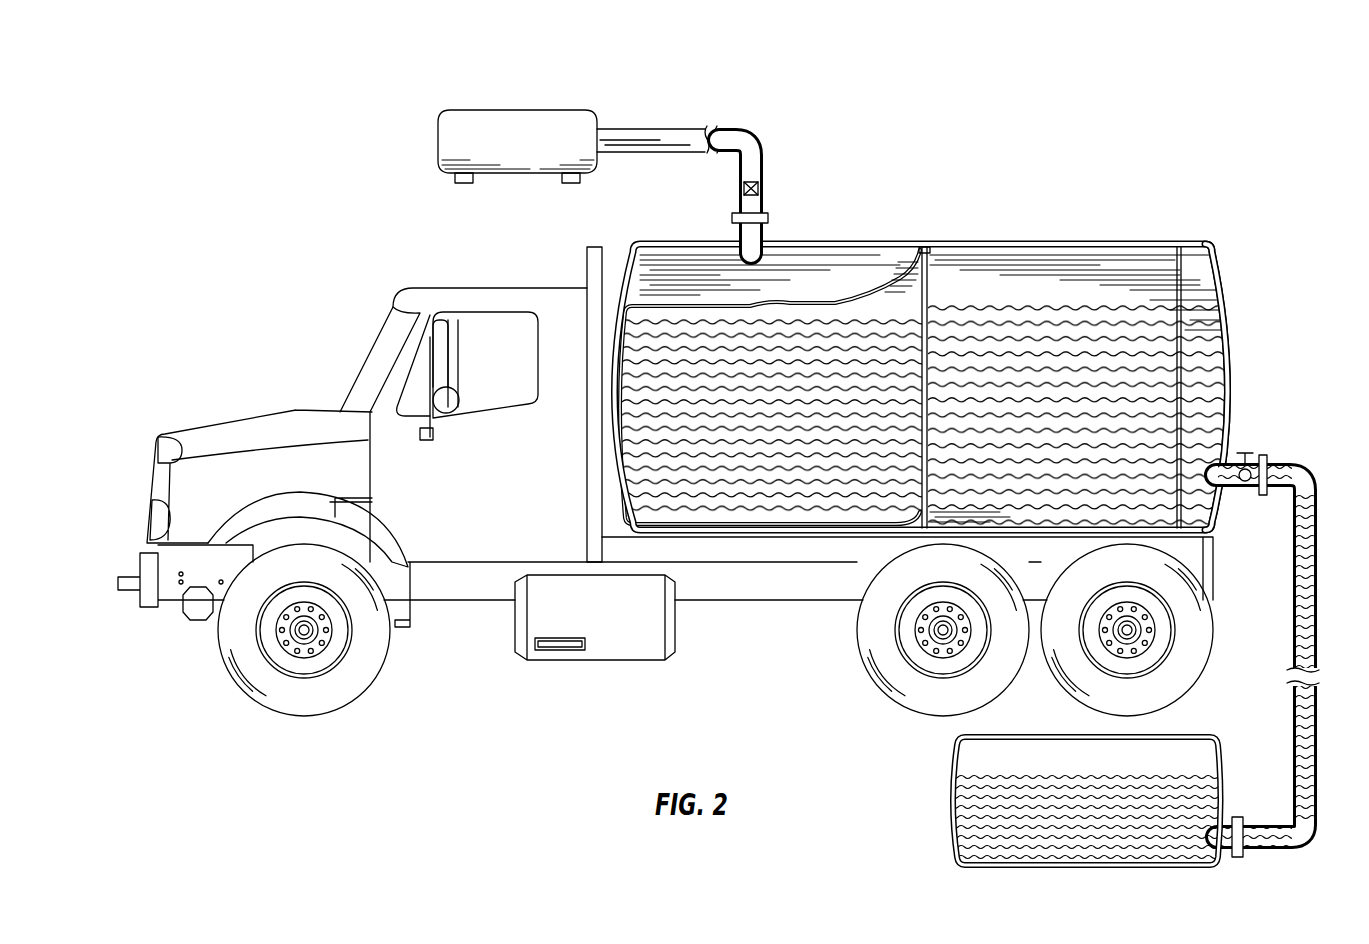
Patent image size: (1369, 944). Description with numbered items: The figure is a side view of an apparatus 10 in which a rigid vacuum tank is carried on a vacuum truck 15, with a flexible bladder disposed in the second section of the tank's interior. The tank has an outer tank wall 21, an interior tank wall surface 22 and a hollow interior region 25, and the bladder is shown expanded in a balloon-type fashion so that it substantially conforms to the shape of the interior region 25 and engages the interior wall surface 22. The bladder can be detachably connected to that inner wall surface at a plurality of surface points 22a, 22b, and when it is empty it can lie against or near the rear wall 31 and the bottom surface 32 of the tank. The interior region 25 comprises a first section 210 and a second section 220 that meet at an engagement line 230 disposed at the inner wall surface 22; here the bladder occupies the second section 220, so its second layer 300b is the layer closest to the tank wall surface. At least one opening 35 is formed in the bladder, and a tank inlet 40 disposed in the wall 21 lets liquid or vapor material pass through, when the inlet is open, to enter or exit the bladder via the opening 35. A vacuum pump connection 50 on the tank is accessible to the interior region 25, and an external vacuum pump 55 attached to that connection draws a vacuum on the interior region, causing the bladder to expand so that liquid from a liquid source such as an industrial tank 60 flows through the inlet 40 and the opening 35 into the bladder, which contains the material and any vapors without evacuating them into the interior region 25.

The apparatus 10 is at (234, 91).
The vacuum truck 15 is at (269, 410).
The outer tank wall 21 is at (1230, 354).
The interior tank wall surface 22 is at (643, 241).
The surface point 22a is at (923, 246).
The surface point 22b is at (921, 533).
The hollow interior region 25 is at (1040, 298).
The rear wall 31 is at (1180, 250).
The bottom surface 32 is at (770, 527).
The opening 35 is at (928, 291).
The tank inlet 40 is at (1236, 490).
The vacuum pump connection 50 is at (769, 218).
The vacuum pump 55 is at (518, 110).
The industrial tank 60 is at (1103, 773).
The first section 210 is at (1072, 268).
The second section 220 is at (866, 272).
The engagement line 230 is at (906, 273).
The second layer 300b is at (766, 302).